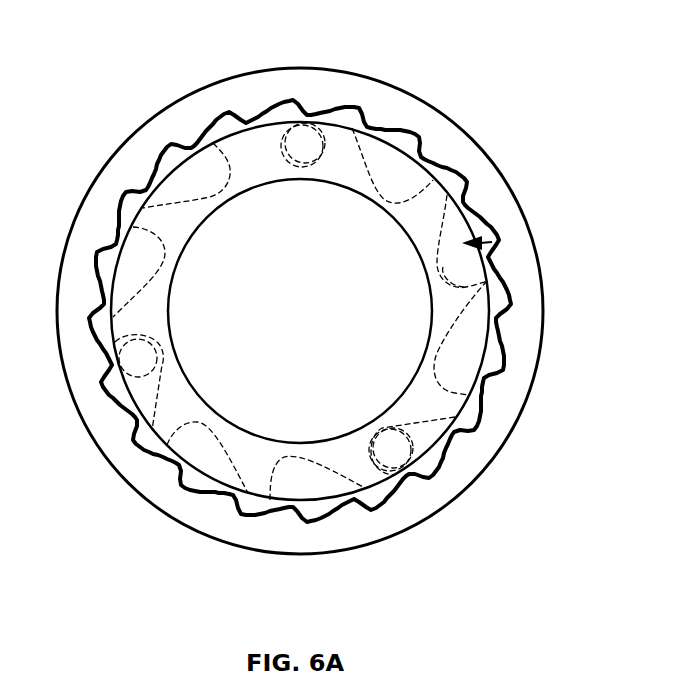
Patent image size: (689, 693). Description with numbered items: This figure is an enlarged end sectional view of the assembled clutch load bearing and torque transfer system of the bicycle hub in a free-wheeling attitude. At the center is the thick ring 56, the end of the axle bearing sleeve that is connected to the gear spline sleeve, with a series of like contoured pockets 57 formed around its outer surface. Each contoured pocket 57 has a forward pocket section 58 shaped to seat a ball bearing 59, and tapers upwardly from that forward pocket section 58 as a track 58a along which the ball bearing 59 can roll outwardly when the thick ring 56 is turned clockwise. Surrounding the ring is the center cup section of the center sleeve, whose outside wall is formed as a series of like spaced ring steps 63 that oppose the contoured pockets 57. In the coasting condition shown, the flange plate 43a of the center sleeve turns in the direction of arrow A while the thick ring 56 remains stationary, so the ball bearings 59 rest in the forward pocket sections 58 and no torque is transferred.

The arrow A is at (380, 28).
The flange plate 43a is at (413, 116).
The spaced ring steps 63 is at (455, 164).
The thick ring 56 is at (453, 310).
The contoured pocket 57 is at (443, 228).
The forward pocket section 58 is at (443, 267).
The track 58a is at (490, 227).
The ball bearing 59 is at (298, 140).